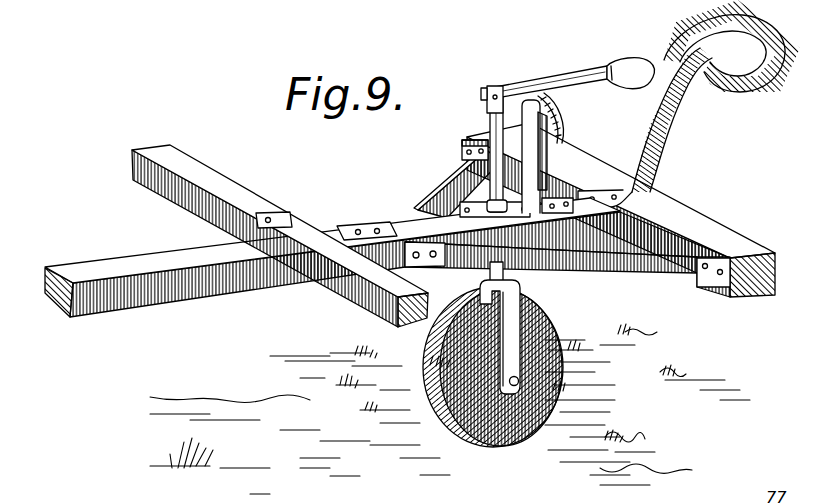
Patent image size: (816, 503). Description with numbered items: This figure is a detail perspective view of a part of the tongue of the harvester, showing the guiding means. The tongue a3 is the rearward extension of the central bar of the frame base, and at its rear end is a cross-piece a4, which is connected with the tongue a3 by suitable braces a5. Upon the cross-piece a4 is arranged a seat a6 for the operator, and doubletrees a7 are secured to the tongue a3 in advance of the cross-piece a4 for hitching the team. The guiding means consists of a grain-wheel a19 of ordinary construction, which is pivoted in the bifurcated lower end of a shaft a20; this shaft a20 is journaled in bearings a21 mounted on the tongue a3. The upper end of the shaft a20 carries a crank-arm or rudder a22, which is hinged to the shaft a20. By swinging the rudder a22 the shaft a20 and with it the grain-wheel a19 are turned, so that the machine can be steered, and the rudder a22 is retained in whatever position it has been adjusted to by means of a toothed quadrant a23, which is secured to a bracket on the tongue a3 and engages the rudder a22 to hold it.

The tongue a3 is at (183, 300).
The cross-piece a4 is at (700, 195).
The braces a5 is at (441, 190).
The seat a6 is at (737, 80).
The doubletrees a7 is at (258, 206).
The grain-wheel a19 is at (552, 332).
The shaft a20 is at (490, 272).
The bearings a21 is at (417, 213).
The crank-arm or rudder a22 is at (580, 60).
The toothed quadrant a23 is at (560, 120).